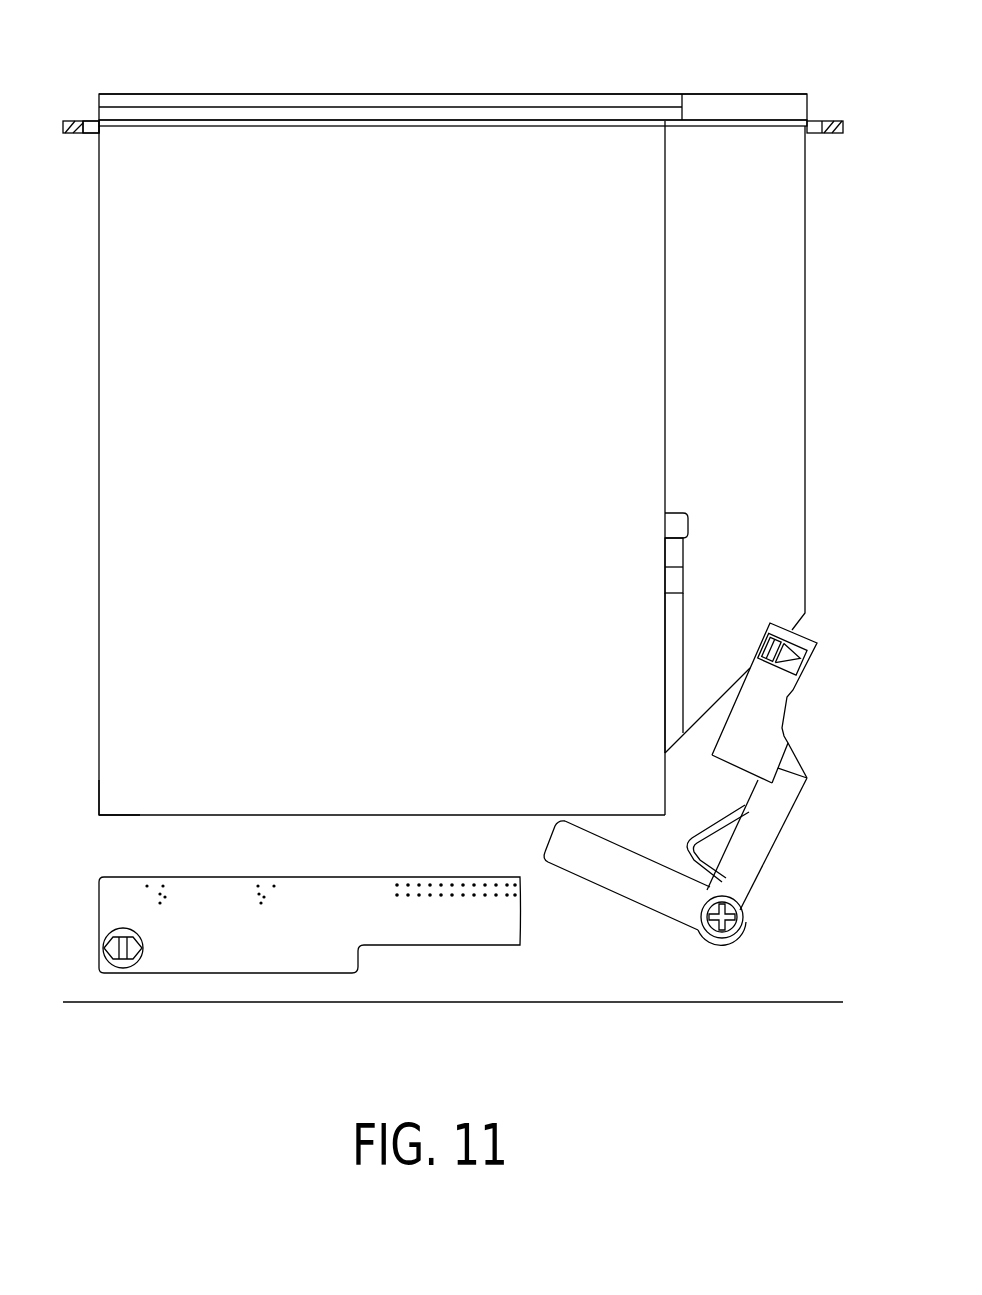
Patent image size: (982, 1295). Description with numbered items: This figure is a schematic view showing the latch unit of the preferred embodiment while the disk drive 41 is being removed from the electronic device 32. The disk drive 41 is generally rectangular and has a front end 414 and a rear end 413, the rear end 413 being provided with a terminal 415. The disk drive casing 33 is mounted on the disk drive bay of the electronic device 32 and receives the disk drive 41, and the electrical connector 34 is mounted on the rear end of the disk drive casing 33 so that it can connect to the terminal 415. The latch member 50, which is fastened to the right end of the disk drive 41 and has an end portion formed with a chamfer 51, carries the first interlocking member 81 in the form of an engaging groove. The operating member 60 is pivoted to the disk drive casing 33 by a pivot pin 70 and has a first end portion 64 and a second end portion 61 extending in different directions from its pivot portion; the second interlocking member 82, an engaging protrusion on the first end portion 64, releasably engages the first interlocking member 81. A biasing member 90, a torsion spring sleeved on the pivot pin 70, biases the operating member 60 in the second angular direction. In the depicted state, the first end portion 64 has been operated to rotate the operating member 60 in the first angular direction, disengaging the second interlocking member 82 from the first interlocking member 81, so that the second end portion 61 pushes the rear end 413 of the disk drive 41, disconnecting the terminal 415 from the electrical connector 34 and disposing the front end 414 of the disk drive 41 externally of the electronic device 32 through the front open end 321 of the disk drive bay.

The electronic device 32 is at (73, 120).
The front open end 321 is at (89, 120).
The disk drive 41 is at (127, 84).
The front end 414 is at (200, 94).
The rear end 413 is at (108, 815).
The terminal 415 is at (320, 815).
The electrical connector 34 is at (220, 963).
The disk drive casing 33 is at (790, 1002).
The latch member 50 is at (702, 522).
The first interlocking member 81 is at (672, 567).
The chamfer 51 is at (665, 724).
The biasing member 90 is at (712, 823).
The first end portion 64 is at (783, 722).
The second interlocking member 82 is at (795, 641).
The operating member 60 is at (792, 848).
The second end portion 61 is at (625, 892).
The pivot pin 70 is at (745, 912).